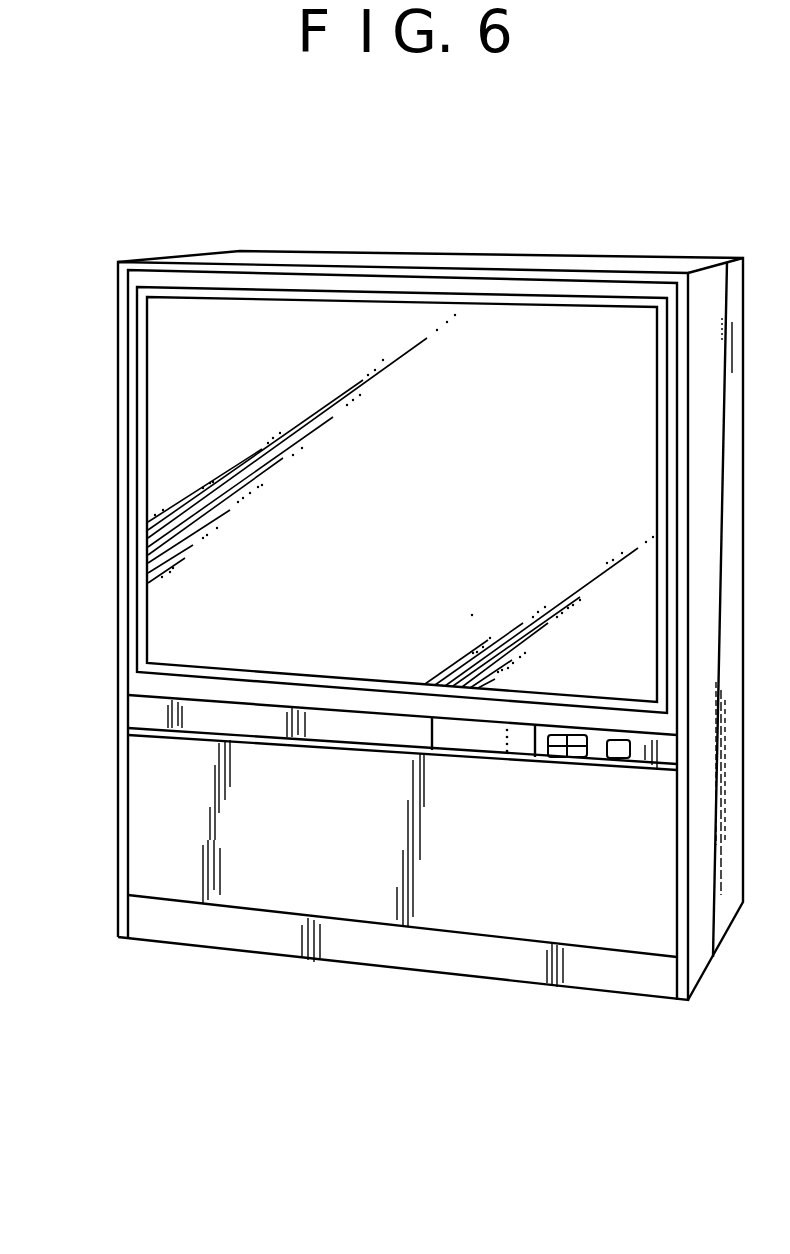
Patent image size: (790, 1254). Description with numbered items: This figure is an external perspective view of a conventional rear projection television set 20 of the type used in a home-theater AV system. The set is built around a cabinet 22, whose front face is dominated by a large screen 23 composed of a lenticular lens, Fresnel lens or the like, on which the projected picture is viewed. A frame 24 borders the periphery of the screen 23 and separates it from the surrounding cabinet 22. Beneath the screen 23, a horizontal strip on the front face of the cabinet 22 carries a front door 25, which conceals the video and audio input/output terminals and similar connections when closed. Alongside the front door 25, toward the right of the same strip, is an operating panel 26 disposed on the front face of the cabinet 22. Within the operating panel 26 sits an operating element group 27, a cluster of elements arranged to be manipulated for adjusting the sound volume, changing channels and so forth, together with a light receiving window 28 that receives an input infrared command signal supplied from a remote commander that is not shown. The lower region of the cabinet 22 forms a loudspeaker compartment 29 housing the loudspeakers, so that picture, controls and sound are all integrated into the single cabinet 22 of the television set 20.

The projection television set 20 is at (390, 637).
The cabinet 22 is at (120, 567).
The screen 23 is at (173, 393).
The frame 24 is at (365, 287).
The front door 25 is at (463, 740).
The operating panel 26 is at (598, 789).
The operating element group 27 is at (565, 755).
The light receiving window 28 is at (624, 759).
The loudspeaker compartment 29 is at (255, 892).